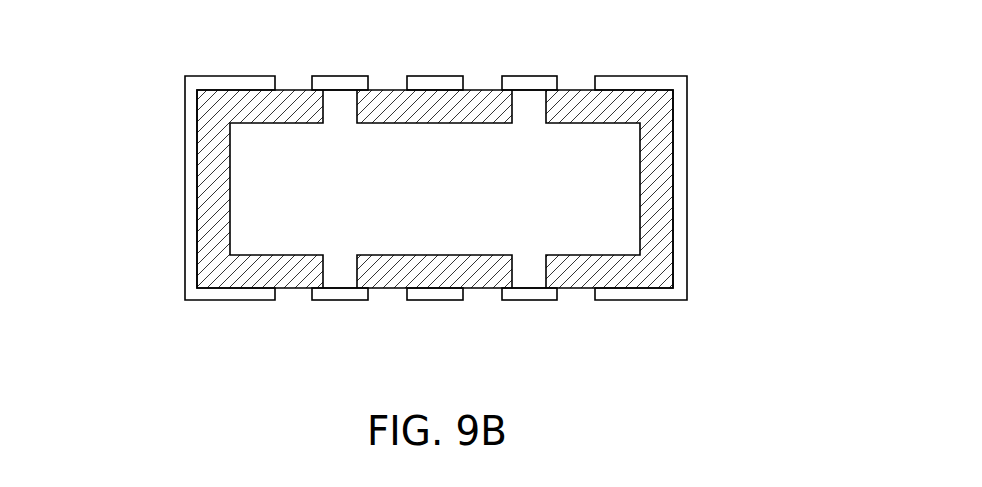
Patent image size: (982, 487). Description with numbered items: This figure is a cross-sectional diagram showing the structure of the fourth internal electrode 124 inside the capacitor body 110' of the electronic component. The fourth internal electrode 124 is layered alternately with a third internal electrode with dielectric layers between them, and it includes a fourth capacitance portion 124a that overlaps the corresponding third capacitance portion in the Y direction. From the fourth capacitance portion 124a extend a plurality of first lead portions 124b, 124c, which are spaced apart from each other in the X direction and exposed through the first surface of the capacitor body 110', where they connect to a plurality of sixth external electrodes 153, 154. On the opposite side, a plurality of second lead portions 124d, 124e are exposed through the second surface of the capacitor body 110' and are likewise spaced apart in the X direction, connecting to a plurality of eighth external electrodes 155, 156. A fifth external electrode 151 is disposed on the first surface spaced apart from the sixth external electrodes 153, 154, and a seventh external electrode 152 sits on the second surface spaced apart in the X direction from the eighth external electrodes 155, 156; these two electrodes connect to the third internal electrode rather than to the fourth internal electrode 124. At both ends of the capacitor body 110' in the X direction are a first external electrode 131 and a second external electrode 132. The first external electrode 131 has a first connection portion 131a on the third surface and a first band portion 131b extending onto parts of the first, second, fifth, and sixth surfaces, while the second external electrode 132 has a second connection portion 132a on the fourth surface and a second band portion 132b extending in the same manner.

The capacitor body 110' is at (435, 152).
The fourth internal electrode 124 is at (88, 110).
The fourth capacitance portion 124a is at (258, 188).
The 4-1st lead portion 124b is at (340, 272).
The 4-1st lead portion 124c is at (528, 273).
The 4-2nd lead portion 124d is at (340, 108).
The 4-2nd lead portion 124e is at (528, 103).
The first external electrode 131 is at (230, 76).
The first connection portion 131a is at (184, 273).
The first band portion 131b is at (213, 306).
The second external electrode 132 is at (641, 80).
The second connection portion 132a is at (690, 279).
The second band portion 132b is at (663, 302).
The fifth external electrode 151 is at (436, 300).
The seventh external electrode 152 is at (436, 80).
The sixth external electrode 153 is at (338, 300).
The sixth external electrode 154 is at (529, 300).
The eighth external electrode 155 is at (340, 76).
The eighth external electrode 156 is at (530, 80).